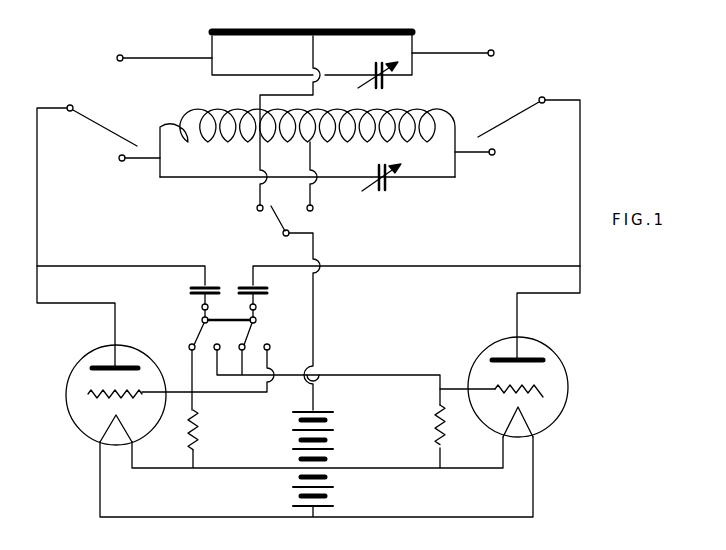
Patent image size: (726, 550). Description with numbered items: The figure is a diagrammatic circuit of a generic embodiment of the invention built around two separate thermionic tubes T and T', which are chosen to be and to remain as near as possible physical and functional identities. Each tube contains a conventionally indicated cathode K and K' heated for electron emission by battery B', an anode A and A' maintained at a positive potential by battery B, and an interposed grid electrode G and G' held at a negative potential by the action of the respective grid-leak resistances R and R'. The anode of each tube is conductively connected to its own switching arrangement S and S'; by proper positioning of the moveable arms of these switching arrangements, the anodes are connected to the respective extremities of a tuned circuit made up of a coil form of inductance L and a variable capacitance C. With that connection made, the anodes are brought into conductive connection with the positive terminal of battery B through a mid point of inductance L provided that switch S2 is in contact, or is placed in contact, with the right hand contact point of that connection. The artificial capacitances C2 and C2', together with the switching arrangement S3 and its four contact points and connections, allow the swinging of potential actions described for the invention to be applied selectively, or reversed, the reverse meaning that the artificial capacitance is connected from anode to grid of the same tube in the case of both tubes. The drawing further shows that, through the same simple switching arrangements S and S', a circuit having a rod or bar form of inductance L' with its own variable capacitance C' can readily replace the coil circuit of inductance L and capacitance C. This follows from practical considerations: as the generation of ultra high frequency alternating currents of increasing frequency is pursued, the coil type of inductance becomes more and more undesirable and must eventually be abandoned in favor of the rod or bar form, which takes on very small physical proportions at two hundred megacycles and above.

The rod or bar form of inductance L' is at (326, 40).
The variable capacitance C' is at (386, 83).
The inductance L is at (307, 129).
The variable capacitance C is at (387, 186).
The switching arrangement S' is at (102, 114).
The switching arrangement S is at (511, 105).
The switch S2 is at (286, 220).
The artificial capacitance C2' is at (197, 277).
The artificial capacitance C2 is at (254, 277).
The switching arrangement S3 is at (246, 316).
The thermionic tube T' is at (104, 400).
The anode A' is at (127, 350).
The grid electrode G' is at (95, 382).
The cathode K' is at (133, 437).
The grid-leak resistance R' is at (210, 430).
The thermionic tube T is at (525, 393).
The anode A is at (526, 341).
The grid electrode G is at (539, 376).
The cathode K is at (500, 431).
The grid-leak resistance R is at (426, 425).
The battery B is at (328, 435).
The battery B' is at (330, 491).